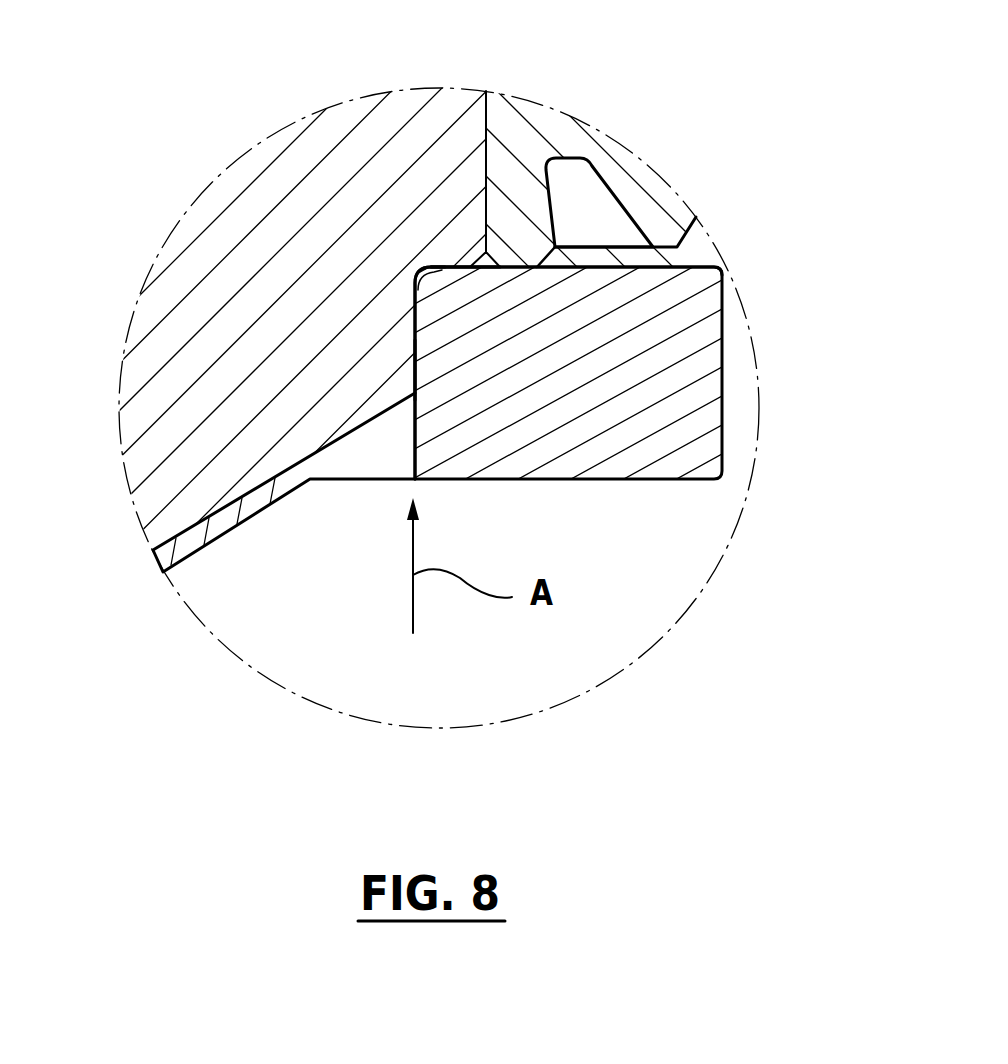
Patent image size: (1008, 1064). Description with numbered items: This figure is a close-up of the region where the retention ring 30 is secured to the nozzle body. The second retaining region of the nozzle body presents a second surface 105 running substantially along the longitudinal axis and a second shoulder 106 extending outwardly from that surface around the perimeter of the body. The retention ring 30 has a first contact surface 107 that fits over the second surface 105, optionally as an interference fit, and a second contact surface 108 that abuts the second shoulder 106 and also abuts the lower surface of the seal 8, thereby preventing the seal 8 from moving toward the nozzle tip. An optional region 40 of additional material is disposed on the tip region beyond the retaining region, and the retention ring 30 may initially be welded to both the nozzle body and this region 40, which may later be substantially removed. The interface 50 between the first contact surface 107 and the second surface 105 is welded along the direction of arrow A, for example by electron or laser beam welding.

The seal 8 is at (693, 229).
The retention ring 30 is at (723, 357).
The region of additional material 40 is at (216, 527).
The interface 50 is at (400, 293).
The second surface 105 is at (415, 333).
The second shoulder 106 is at (452, 250).
The first contact surface 107 is at (415, 373).
The second contact surface 108 is at (688, 267).